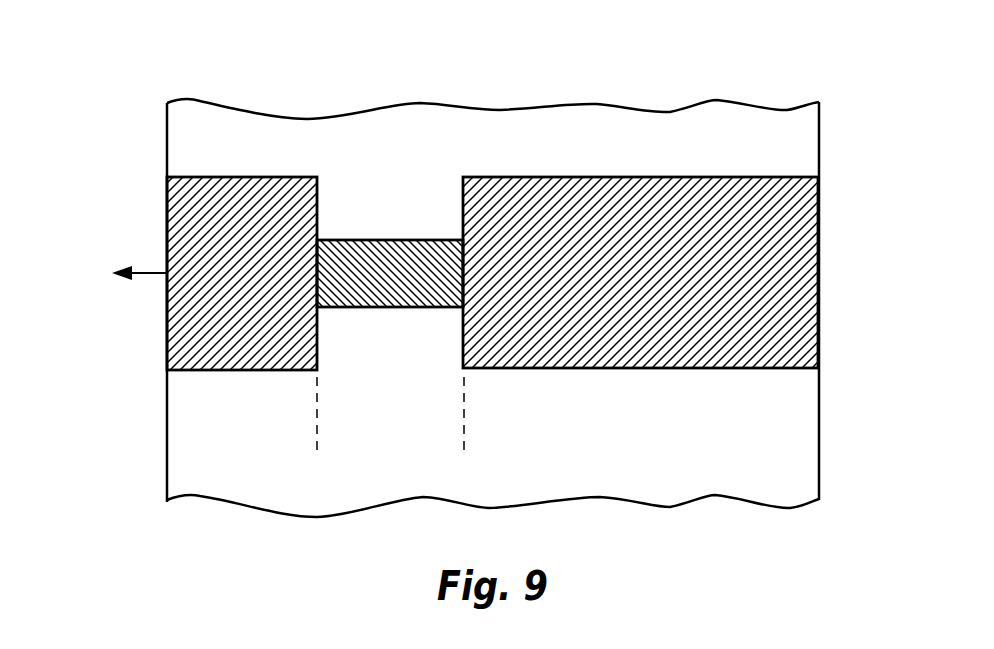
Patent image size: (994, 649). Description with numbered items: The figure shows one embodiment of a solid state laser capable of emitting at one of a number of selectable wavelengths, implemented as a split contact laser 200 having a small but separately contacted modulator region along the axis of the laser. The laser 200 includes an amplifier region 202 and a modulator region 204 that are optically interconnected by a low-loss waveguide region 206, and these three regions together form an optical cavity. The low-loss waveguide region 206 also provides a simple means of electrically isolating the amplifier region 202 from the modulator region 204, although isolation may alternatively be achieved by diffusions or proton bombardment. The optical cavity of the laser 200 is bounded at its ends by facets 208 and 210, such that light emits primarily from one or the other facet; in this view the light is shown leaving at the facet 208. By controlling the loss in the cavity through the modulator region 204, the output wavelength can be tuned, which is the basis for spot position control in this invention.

The split contact laser 200 is at (560, 38).
The amplifier region 202 is at (470, 410).
The modulator region 204 is at (313, 410).
The low-loss waveguide region 206 is at (322, 410).
The facet 208 is at (167, 217).
The facet 210 is at (819, 224).